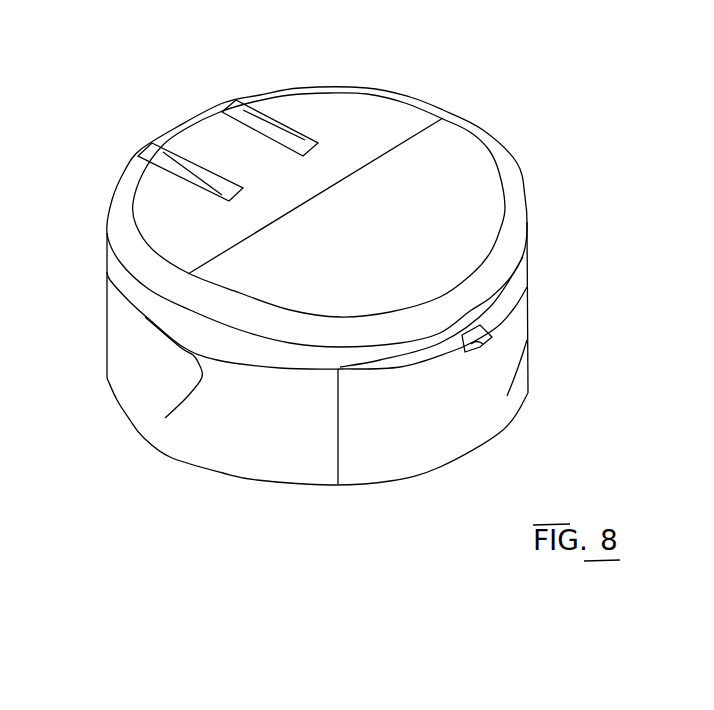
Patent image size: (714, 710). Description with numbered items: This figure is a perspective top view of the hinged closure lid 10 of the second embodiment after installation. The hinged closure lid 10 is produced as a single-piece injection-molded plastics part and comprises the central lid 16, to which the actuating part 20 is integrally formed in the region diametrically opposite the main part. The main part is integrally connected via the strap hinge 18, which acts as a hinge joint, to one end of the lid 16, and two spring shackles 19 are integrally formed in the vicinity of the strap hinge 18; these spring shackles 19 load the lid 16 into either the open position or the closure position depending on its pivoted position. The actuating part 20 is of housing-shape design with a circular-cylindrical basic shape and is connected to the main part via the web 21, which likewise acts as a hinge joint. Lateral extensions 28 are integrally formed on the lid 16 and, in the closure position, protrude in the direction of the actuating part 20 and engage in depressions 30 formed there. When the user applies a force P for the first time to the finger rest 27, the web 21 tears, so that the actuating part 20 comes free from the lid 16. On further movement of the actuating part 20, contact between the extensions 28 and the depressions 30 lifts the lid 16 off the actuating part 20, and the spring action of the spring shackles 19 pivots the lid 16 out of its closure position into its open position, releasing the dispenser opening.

The hinged closure lid 10 is at (482, 60).
The lid 16 is at (473, 167).
The strap hinge 18 is at (183, 128).
The spring shackles 19 is at (246, 112).
The actuating part 20 is at (253, 462).
The web 21 is at (497, 335).
The finger rest 27 is at (507, 396).
The lateral extensions 28 is at (173, 352).
The depressions 30 is at (165, 418).
The force P is at (470, 393).